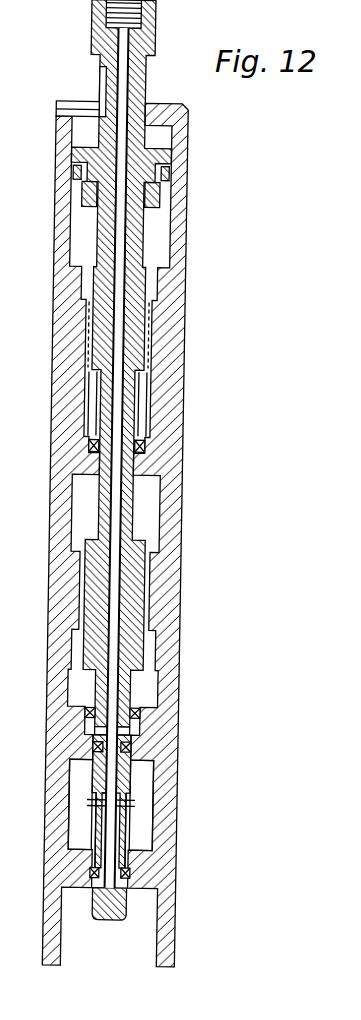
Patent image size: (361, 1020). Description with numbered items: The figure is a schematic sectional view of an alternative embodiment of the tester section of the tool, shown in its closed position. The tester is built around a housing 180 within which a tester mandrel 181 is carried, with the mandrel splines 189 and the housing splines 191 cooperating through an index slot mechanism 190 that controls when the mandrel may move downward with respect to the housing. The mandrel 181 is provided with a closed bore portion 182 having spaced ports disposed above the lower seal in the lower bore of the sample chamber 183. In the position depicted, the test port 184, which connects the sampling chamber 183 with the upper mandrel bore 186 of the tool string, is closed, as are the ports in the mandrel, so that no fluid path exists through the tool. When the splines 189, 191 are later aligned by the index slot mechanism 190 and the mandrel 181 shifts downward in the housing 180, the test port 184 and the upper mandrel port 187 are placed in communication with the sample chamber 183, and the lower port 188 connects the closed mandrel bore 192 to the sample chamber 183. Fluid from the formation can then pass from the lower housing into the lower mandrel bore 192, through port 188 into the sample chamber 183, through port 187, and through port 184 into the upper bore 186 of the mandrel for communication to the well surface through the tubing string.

The housing 180 is at (180, 135).
The mandrel 181 is at (138, 82).
The closed bore portion 182 is at (117, 775).
The sample chamber 183 is at (142, 815).
The test port 184 is at (125, 732).
The mandrel bore 186 is at (117, 602).
The upper mandrel port 187 is at (127, 802).
The lower port 188 is at (123, 858).
The mandrel splines 189 is at (165, 177).
The index slot mechanism 190 is at (97, 95).
The housing splines 191 is at (163, 197).
The closed mandrel bore 192 is at (108, 832).